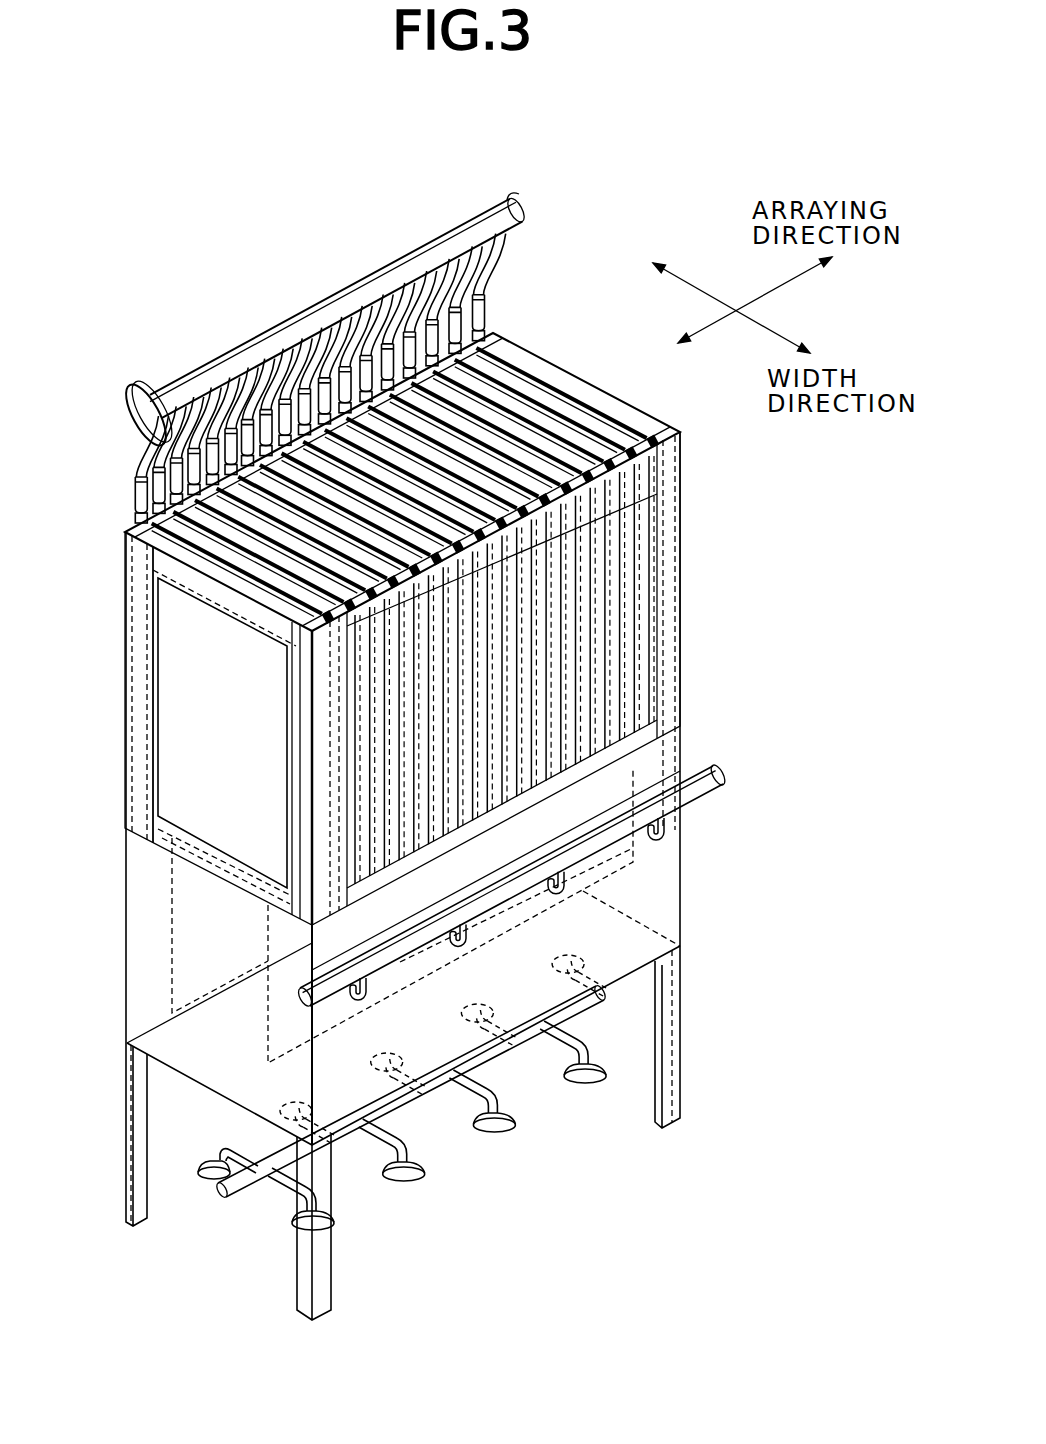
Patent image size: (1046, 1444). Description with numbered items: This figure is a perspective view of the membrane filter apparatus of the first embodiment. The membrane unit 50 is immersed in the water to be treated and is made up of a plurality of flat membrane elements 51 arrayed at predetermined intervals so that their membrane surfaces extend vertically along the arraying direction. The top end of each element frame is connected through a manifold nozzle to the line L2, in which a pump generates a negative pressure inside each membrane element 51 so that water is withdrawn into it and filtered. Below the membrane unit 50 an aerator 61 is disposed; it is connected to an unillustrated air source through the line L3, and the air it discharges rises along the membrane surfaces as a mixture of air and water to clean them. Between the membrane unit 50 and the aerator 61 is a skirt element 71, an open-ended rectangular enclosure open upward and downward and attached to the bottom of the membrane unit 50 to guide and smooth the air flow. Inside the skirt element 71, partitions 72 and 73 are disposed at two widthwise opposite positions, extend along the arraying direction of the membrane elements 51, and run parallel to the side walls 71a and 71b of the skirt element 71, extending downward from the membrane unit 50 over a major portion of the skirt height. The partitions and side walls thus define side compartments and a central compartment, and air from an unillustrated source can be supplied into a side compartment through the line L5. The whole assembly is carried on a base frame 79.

The membrane unit 50 is at (552, 340).
The flat membrane element 51 is at (217, 572).
The line L2 is at (303, 311).
The line L5 is at (691, 777).
The skirt element 71 is at (657, 895).
The side wall of the skirt element 71a is at (126, 858).
The side wall of the skirt element 71b is at (665, 862).
The partition 72 is at (170, 918).
The partition 73 is at (268, 1030).
The base frame 79 is at (126, 1128).
The line L3 is at (256, 1182).
The aerator 61 is at (500, 1140).